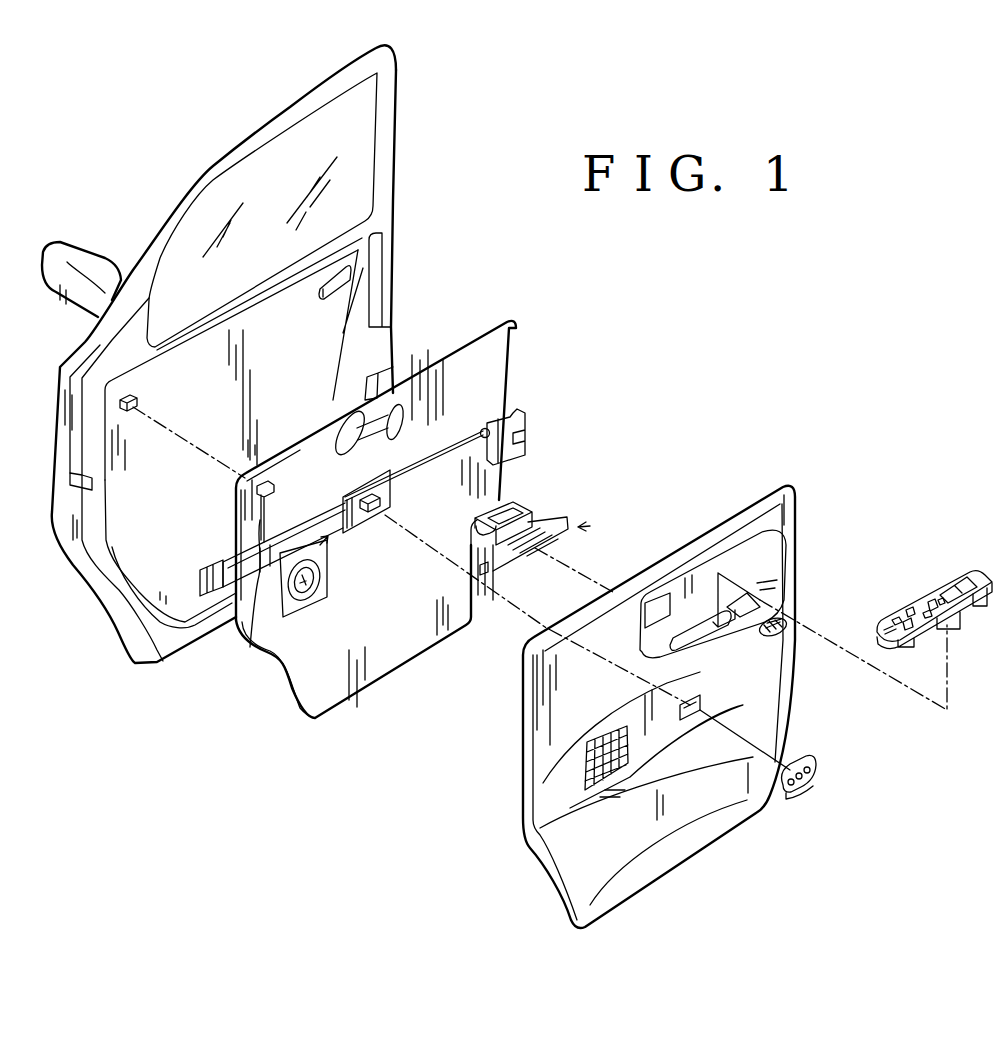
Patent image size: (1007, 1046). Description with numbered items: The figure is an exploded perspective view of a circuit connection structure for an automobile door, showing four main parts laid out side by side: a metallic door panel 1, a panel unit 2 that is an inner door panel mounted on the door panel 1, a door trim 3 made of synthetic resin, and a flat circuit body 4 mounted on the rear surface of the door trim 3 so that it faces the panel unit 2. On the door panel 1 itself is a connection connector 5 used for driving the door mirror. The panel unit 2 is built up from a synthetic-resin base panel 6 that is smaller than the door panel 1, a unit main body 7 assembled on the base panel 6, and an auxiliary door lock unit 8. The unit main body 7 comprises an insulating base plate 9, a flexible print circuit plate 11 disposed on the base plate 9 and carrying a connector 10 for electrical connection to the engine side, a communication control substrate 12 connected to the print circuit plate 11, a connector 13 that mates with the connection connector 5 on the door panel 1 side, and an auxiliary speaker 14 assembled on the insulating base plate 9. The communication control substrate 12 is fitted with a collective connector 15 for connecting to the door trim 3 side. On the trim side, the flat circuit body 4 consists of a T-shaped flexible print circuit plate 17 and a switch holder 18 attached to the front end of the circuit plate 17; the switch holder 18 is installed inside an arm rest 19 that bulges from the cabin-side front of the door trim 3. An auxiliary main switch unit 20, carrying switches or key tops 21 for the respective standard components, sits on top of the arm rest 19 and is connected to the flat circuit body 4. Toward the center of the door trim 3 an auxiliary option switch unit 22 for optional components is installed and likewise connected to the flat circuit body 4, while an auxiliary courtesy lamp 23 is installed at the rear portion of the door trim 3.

The door panel 1 is at (263, 118).
The panel unit 2 is at (513, 327).
The door trim 3 is at (795, 487).
The flat circuit body 4 is at (590, 526).
The connection connector 5 is at (136, 404).
The base panel 6 is at (447, 370).
The unit main body 7 is at (347, 548).
The door lock unit 8 is at (523, 417).
The insulating base plate 9 is at (327, 540).
The connector 10 is at (203, 575).
The flexible print circuit plate 11 is at (250, 647).
The communication control substrate 12 is at (370, 520).
The connector 13 is at (267, 480).
The speaker 14 is at (310, 600).
The collective connector 15 is at (390, 487).
The flexible print circuit plate 17 is at (522, 548).
The switch holder 18 is at (530, 510).
The arm rest 19 is at (738, 617).
The main switch unit 20 is at (970, 572).
The switches 21 is at (915, 607).
The option switch unit 22 is at (807, 793).
The courtesy lamp 23 is at (780, 637).